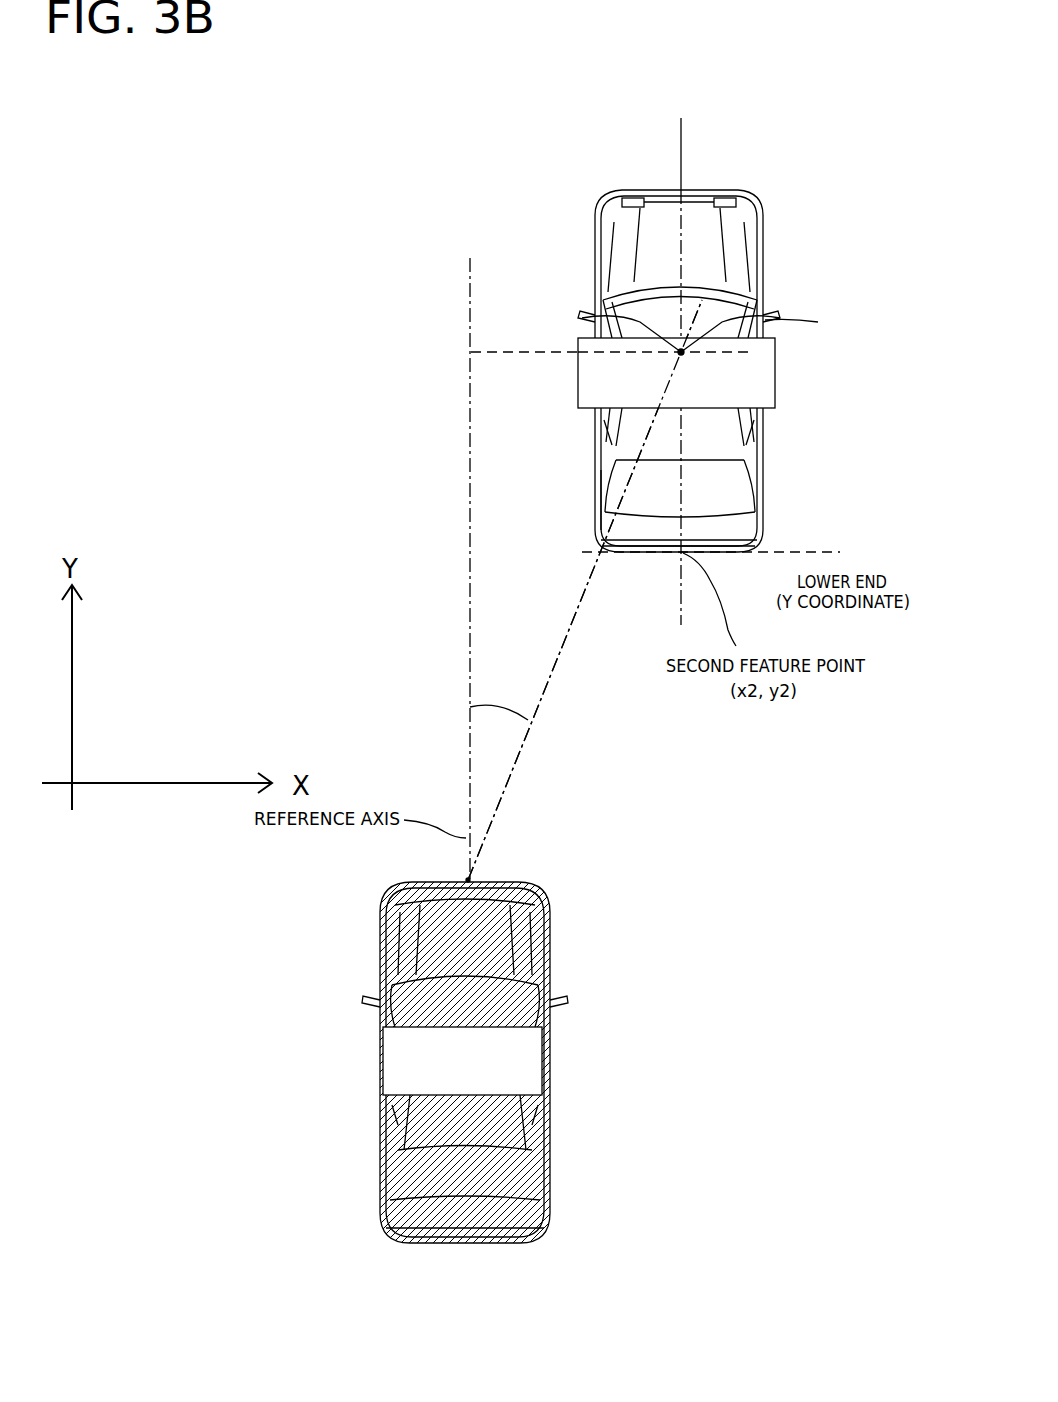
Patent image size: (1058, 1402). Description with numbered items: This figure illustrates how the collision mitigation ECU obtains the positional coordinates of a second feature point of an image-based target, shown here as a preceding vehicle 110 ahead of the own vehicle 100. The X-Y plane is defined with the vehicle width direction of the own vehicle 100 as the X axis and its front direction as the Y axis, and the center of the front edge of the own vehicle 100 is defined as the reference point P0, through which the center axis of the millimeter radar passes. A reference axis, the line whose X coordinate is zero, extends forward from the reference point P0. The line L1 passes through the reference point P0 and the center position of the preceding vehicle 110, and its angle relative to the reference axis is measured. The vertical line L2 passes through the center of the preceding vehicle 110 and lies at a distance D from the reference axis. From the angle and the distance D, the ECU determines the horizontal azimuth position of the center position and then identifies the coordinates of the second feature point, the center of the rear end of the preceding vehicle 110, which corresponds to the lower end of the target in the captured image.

The own vehicle 100 is at (550, 950).
The preceding vehicle 110 is at (763, 235).
The line L1 is at (540, 700).
The vertical line L2 is at (683, 152).
The distance D is at (582, 316).
The reference point Po P0 is at (470, 878).